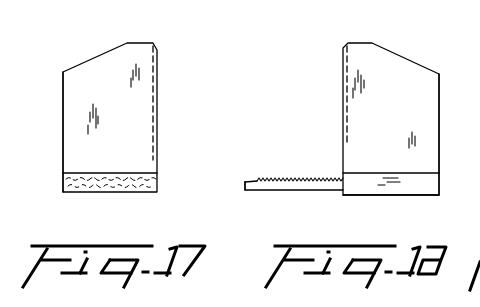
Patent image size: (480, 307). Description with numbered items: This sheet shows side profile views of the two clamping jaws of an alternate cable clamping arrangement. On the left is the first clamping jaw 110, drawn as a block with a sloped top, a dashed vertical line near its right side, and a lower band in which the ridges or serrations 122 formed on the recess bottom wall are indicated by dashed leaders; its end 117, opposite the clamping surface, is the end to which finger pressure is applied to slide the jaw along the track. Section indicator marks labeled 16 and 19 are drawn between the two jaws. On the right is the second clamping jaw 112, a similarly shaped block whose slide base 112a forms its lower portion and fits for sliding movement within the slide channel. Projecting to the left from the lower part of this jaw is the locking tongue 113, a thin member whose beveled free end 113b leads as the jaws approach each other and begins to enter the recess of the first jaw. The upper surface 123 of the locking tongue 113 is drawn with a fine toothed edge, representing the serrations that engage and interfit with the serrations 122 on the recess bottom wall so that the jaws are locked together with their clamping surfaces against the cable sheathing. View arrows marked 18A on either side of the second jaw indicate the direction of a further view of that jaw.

In FIG. 17, the first clamping jaw 110 is at (100, 72).
In FIG. 17, the end of jaw 117 is at (63, 108).
In FIG. 18, the end of jaw 117 is at (441, 151).
In FIG. 17, the ridges or serrations 122 is at (120, 197).
In FIG. 18, the second clamping jaw 112 is at (393, 65).
In FIG. 18, the slide base 112a is at (479, 216).
In FIG. 18, the locking tongue 113 is at (312, 191).
In FIG. 18, the beveled free end 113b is at (246, 183).
In FIG. 18, the upper surface of locking tongue 123 is at (284, 178).
In FIG. 17, the section line 16- 16 is at (195, 16).
In FIG. 18, the section line 19- 19 is at (215, 16).
In FIG. 18, the view direction 18A is at (323, 117).